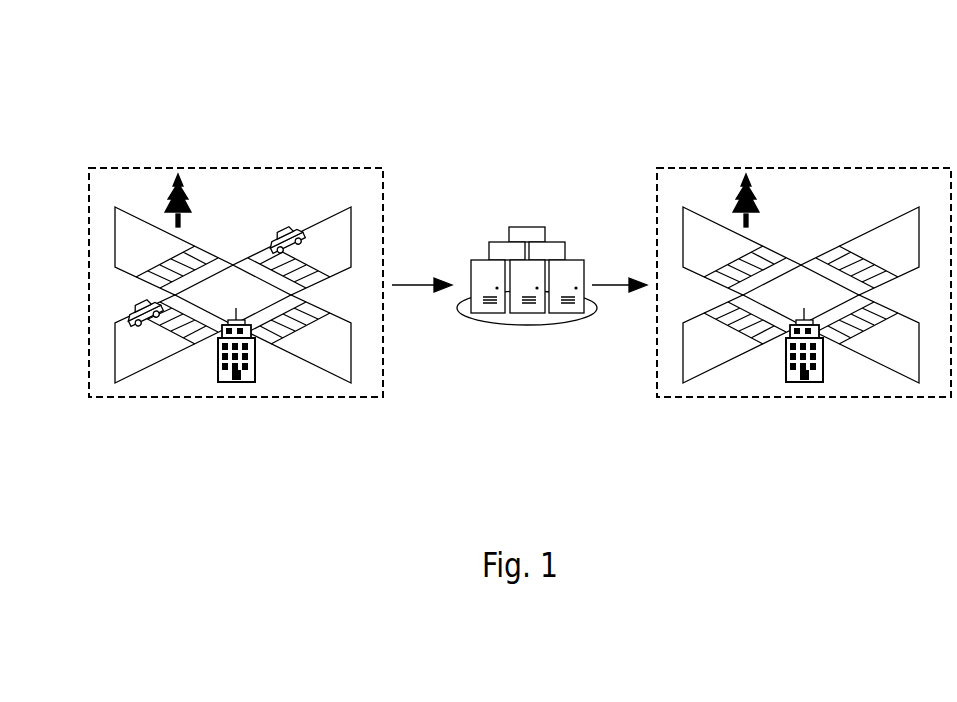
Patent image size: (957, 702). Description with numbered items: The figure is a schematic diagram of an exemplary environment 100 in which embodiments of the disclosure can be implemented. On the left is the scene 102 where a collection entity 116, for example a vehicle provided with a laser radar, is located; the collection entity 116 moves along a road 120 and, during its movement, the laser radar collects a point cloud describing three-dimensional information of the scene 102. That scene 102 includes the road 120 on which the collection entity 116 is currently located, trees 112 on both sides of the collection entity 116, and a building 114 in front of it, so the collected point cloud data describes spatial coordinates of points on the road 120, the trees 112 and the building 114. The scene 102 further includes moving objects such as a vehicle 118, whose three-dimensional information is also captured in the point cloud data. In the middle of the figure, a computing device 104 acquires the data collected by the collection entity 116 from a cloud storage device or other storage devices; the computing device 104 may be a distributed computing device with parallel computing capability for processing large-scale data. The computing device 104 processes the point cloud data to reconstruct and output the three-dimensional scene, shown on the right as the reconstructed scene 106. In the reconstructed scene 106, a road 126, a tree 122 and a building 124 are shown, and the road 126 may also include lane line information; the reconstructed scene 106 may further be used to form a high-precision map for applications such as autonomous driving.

The environment 100 is at (268, 55).
The scene 102 is at (290, 167).
The computing device 104 is at (533, 226).
The reconstructed scene 106 is at (872, 168).
The trees 112 is at (185, 205).
The building 114 is at (217, 357).
The collection entity 116 is at (278, 240).
The vehicle 118 is at (143, 305).
The road 120 is at (310, 310).
The tree 122 is at (753, 205).
The building 124 is at (785, 357).
The road 126 is at (878, 311).